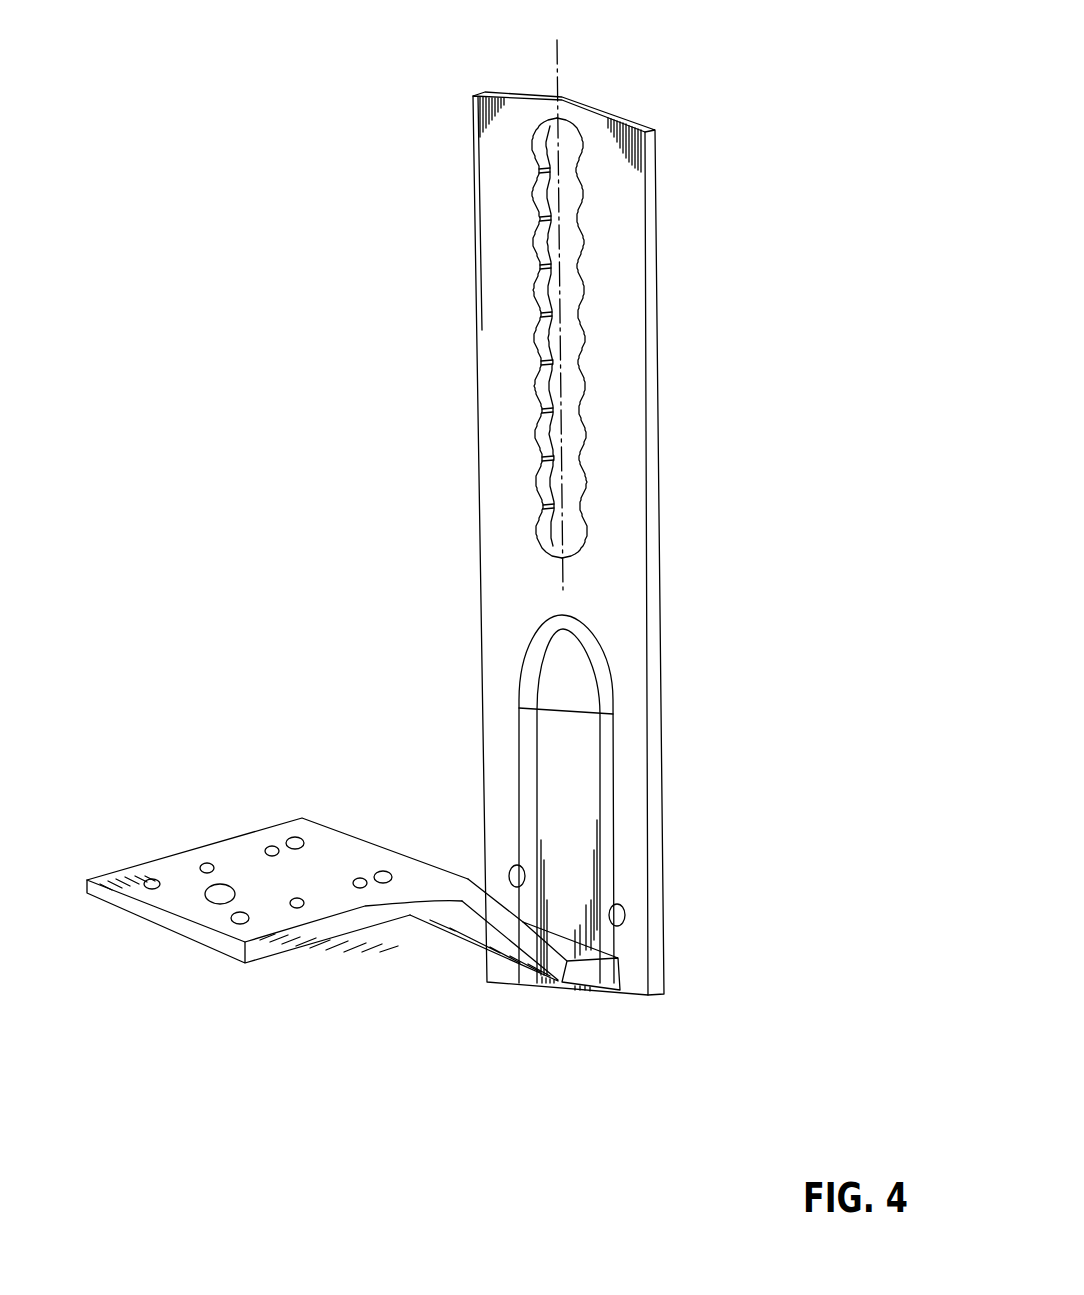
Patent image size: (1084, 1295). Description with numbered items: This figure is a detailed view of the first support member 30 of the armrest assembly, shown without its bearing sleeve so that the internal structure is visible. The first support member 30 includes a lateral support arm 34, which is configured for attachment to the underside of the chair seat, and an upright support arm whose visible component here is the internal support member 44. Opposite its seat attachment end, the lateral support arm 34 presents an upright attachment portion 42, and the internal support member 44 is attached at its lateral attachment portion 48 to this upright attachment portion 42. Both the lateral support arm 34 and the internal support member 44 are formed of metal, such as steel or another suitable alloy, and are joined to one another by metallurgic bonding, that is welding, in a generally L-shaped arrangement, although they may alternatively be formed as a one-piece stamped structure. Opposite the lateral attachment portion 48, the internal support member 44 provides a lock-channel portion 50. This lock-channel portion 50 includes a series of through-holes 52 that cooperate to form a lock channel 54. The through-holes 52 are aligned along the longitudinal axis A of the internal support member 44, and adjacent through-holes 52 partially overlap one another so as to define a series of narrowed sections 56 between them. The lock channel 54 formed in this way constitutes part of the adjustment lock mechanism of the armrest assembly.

The longitudinal axis A is at (557, 72).
The first support member 30 is at (780, 97).
The lateral support arm 34 is at (353, 941).
The upright attachment portion 42 is at (570, 978).
The internal support member 44 is at (615, 422).
The lateral attachment portion 48 is at (637, 983).
The lock-channel portion 50 is at (556, 338).
The through-holes 52 is at (537, 202).
The lock channel 54 is at (570, 250).
The narrowed sections 56 is at (540, 358).